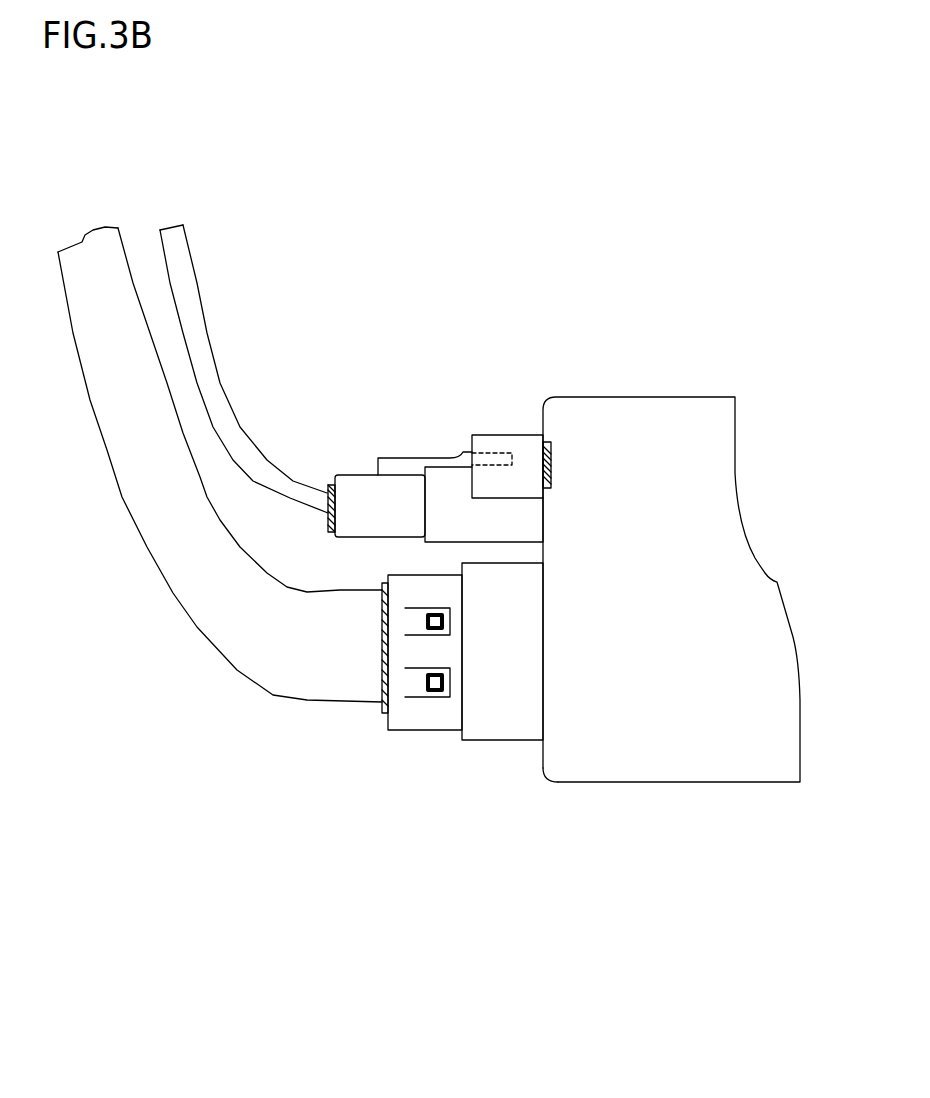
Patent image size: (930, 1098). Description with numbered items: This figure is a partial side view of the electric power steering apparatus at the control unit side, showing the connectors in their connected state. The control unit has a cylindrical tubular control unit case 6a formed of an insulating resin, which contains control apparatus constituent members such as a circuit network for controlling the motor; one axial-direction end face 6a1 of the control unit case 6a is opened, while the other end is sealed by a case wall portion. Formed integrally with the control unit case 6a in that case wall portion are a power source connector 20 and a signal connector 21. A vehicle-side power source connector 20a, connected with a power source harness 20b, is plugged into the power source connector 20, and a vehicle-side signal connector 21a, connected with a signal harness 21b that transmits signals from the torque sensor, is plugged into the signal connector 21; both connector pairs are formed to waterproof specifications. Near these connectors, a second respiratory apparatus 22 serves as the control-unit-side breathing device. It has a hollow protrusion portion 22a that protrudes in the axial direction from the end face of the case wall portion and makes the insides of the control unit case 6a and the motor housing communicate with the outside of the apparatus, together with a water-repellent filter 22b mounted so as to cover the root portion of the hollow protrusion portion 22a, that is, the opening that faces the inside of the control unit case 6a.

The control unit case 6a is at (695, 748).
The one axial-direction end face 6a1 is at (540, 752).
The power source connector 20 is at (447, 497).
The vehicle-side power source connector 20a is at (352, 485).
The power source harness 20b is at (193, 327).
The signal connector 21 is at (495, 730).
The vehicle-side signal connector 21a is at (413, 717).
The signal harness 21b is at (250, 655).
The second respiratory apparatus 22 is at (600, 318).
The hollow protrusion portion 22a is at (500, 433).
The filter 22b is at (550, 457).